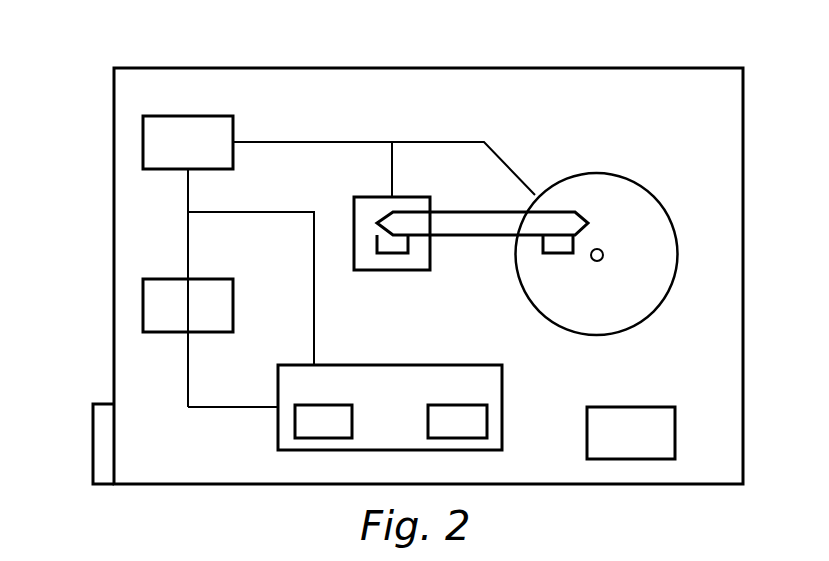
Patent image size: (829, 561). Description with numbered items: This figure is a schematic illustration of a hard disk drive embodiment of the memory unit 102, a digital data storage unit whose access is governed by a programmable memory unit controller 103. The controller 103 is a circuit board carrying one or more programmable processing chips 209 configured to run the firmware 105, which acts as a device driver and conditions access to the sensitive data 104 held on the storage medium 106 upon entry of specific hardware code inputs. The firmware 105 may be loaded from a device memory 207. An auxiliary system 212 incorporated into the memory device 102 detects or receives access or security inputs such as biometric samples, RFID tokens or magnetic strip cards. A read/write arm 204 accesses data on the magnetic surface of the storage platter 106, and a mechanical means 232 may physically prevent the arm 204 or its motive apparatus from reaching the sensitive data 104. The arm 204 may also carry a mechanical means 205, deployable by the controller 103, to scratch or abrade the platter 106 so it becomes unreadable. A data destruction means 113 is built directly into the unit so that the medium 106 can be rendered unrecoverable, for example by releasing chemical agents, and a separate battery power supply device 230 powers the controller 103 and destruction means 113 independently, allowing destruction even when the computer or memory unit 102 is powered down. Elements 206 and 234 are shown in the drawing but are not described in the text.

The memory unit 102 is at (677, 64).
The memory unit controller 103 is at (390, 385).
The sensitive data 104 is at (618, 262).
The firmware 105 is at (222, 278).
The storage medium 106 is at (633, 230).
The data destruction means 113 is at (196, 116).
The read/write arm 204 is at (460, 223).
The mechanical means 205 is at (557, 253).
The connector 206 is at (97, 440).
The device memory 207 is at (233, 310).
The programmable processing chip 209 is at (310, 405).
The auxiliary system 212 is at (468, 405).
The separate power supply device 230 is at (627, 407).
The mechanical means 232 is at (393, 242).
The actuator 234 is at (354, 213).